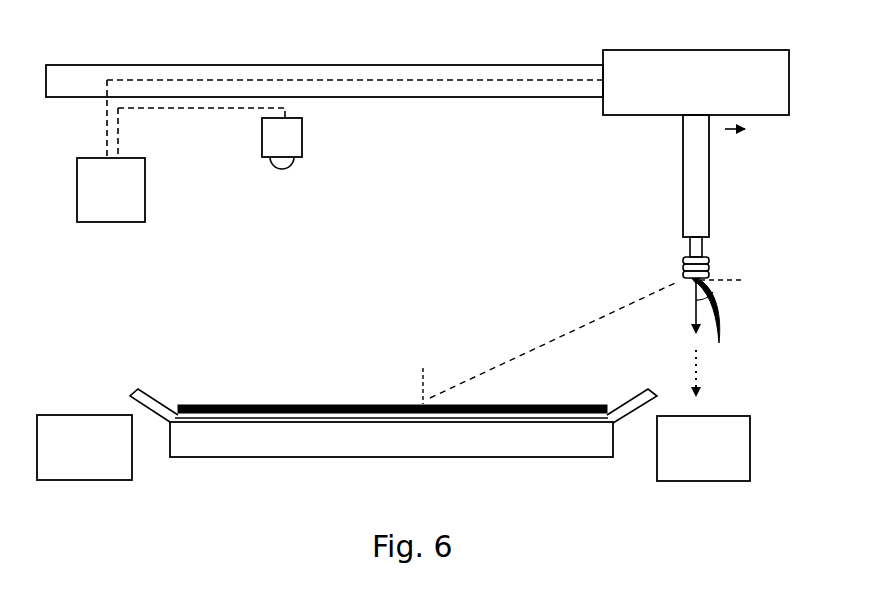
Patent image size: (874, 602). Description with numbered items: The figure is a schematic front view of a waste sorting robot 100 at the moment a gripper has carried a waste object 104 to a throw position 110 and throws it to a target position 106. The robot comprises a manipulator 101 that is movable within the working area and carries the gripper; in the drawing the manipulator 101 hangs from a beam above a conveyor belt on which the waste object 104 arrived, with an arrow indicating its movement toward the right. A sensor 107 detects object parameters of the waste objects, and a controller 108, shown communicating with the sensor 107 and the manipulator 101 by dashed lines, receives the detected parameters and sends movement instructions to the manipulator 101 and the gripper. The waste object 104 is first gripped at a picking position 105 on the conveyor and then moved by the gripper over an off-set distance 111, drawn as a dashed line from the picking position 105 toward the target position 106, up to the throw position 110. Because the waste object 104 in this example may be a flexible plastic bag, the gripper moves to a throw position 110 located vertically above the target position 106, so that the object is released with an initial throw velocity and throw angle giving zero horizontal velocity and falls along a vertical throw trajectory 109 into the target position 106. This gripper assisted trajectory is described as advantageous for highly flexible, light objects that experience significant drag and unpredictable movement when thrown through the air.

The waste sorting robot 100 is at (124, 42).
The manipulator 101 is at (739, 58).
The waste object 104 is at (690, 283).
The picking position 105 is at (421, 402).
The target position 106 is at (730, 415).
The sensor 107 is at (283, 162).
The controller 108 is at (111, 151).
The throw trajectory 109 is at (700, 367).
The throw position 110 is at (686, 278).
The off-set distance 111 is at (526, 346).